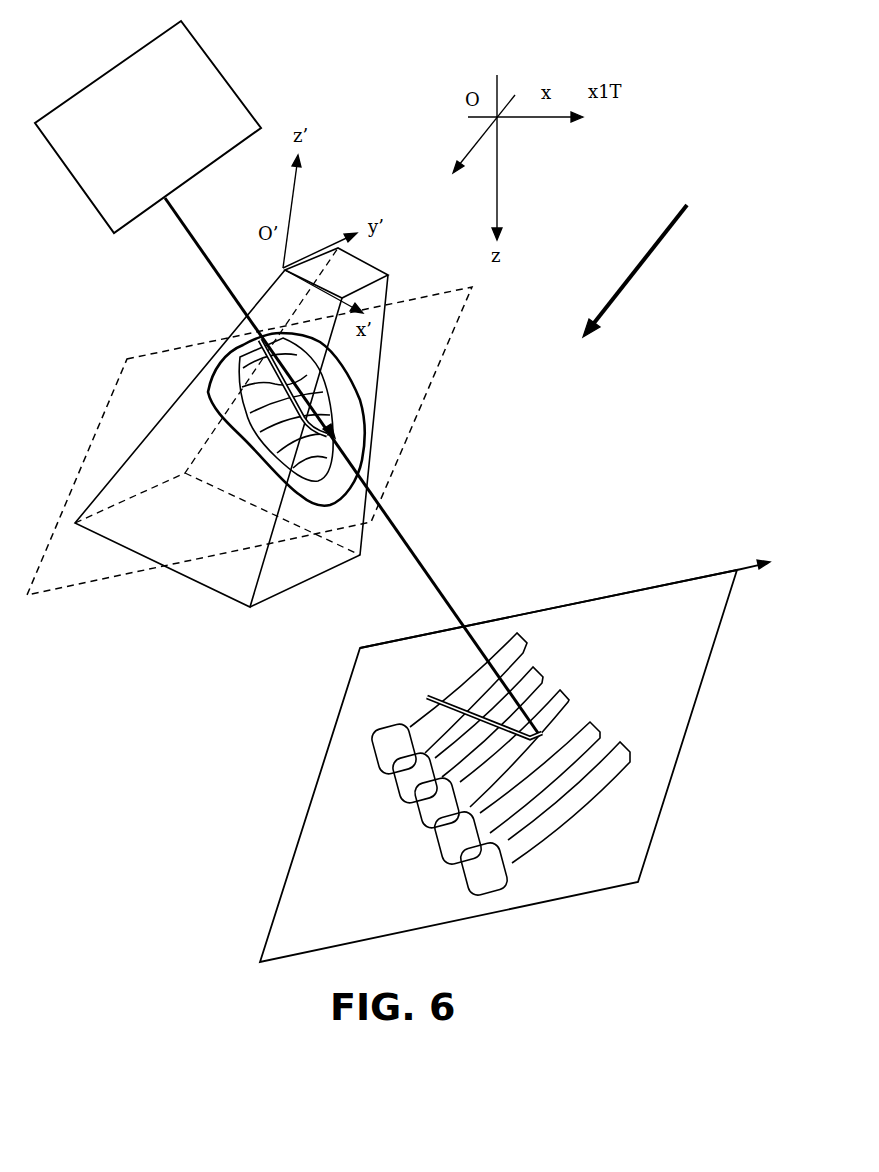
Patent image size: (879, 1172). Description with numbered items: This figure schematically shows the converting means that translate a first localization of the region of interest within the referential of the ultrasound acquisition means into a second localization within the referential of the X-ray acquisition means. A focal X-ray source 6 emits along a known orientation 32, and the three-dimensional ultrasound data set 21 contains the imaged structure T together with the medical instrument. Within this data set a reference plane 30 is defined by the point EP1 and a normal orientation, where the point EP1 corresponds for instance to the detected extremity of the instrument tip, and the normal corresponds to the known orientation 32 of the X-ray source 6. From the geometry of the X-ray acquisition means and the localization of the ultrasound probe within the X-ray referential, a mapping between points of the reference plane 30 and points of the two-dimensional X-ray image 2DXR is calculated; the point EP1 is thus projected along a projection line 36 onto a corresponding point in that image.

The focal X-ray source 6 is at (228, 77).
The 3D ultrasound data set 21 is at (377, 363).
The reference plane 30 is at (108, 400).
The known orientation of the X-ray source 32 is at (635, 270).
The projection line 36 is at (455, 617).
The two-dimensional X-ray image plane 2DXR is at (292, 860).
The point EP1 is at (333, 440).
The tooth T is at (354, 419).